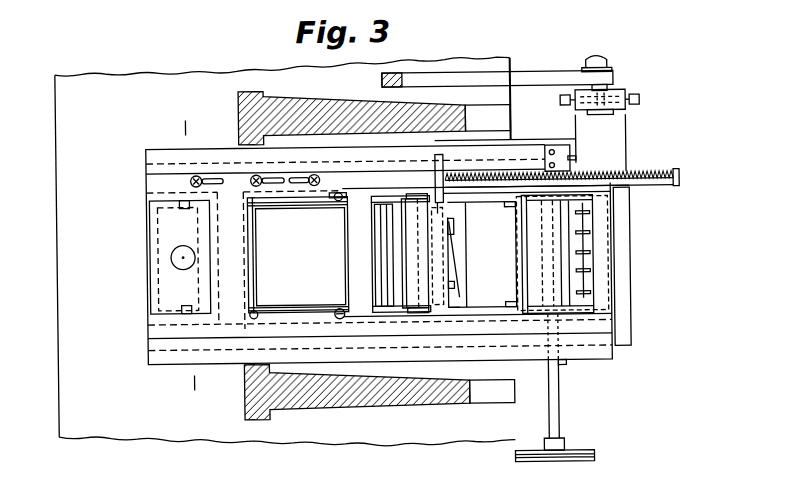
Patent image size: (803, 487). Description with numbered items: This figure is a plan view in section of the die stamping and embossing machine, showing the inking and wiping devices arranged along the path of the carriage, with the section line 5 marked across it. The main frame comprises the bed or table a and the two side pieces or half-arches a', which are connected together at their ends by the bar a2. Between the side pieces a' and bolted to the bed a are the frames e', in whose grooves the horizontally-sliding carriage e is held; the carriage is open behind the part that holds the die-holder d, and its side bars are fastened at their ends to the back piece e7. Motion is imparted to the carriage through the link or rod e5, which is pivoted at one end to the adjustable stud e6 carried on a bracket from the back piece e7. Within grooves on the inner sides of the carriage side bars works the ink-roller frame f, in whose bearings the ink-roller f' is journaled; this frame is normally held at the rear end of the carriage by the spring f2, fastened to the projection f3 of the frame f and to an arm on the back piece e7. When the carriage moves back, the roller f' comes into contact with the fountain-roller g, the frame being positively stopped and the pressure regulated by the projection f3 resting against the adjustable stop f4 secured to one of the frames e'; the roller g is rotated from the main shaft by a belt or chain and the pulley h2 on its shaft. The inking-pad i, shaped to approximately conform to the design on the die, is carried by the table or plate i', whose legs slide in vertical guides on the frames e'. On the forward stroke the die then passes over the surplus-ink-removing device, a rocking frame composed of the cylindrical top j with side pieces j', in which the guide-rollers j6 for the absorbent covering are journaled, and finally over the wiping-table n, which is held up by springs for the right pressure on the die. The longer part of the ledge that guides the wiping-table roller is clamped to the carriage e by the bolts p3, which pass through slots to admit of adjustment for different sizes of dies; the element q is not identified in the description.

The bed or table a is at (317, 253).
The side pieces or half-arches a' is at (374, 108).
The bar a2 is at (379, 398).
The horizontally-sliding carriage e is at (379, 257).
The frames e' is at (379, 255).
The link or rod e5 is at (497, 67).
The adjustable stud e6 is at (600, 109).
The back piece of the carriage e7 is at (634, 265).
The line 5 5 is at (187, 259).
The die-holder d is at (179, 257).
The bolts p3 is at (318, 208).
The wiping-table n is at (298, 256).
The plate q is at (300, 257).
The side pieces j' is at (390, 256).
The cylindrical top j is at (374, 254).
The guide-rollers j6 is at (369, 255).
The ink-roller f' is at (414, 253).
The ink-roller frame f is at (435, 253).
The spring f2 is at (562, 170).
The projection f3 is at (447, 176).
The adjustable stop f4 is at (560, 146).
The inking-pad i is at (453, 262).
The table or plate i' is at (481, 255).
The fountain-roller g is at (562, 253).
The pulley h2 is at (570, 411).